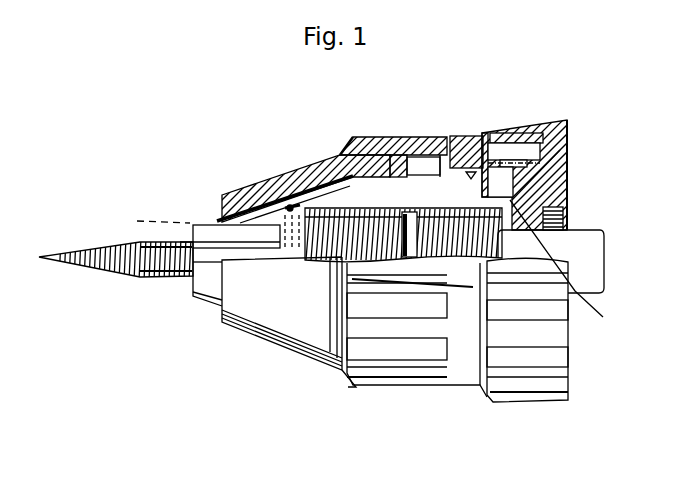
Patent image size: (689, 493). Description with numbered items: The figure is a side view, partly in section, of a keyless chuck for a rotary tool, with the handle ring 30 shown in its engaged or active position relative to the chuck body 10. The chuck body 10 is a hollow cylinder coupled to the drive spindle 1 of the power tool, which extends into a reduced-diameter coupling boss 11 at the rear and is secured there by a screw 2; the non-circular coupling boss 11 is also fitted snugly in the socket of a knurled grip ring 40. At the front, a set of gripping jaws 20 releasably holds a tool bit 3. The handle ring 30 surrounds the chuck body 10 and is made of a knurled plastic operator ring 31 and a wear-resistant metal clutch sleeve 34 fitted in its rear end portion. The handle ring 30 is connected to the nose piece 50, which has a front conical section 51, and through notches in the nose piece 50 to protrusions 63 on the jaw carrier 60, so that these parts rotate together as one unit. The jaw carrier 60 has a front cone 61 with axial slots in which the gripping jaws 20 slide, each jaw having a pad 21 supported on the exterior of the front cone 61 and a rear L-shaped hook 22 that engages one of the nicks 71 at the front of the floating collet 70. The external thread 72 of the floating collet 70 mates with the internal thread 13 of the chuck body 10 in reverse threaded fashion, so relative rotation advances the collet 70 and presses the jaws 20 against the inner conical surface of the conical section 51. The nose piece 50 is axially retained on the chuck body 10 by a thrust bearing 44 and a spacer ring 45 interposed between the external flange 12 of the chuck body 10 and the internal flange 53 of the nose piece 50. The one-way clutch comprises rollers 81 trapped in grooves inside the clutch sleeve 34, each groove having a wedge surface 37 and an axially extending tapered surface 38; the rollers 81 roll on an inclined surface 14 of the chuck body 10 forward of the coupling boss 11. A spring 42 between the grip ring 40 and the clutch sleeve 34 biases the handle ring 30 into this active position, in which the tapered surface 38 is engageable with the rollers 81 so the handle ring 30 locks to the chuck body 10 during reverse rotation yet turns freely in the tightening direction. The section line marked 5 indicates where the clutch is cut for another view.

The drive spindle 1 is at (592, 257).
The screw 2 is at (564, 218).
The tool bit 3 is at (100, 263).
The section line 5- 5 is at (451, 257).
The chuck body 10 is at (512, 200).
The coupling boss 11 is at (572, 269).
The external flange 12 is at (320, 193).
The internal thread 13 is at (453, 262).
The inclined surface 14 is at (557, 124).
The gripping jaws 20 is at (194, 301).
The pad 21 is at (232, 213).
The L-shaped hook 22 is at (262, 193).
The handle ring 30 is at (394, 388).
The operator ring 31 is at (363, 322).
The clutch sleeve 34 is at (468, 136).
The wedge surface 37 is at (460, 150).
The tapered surface 38 is at (488, 134).
The grip ring 40 is at (529, 403).
The spring 42 is at (558, 152).
The thrust bearing 44 is at (340, 153).
The spacer ring 45 is at (394, 160).
The nose piece 50 is at (254, 343).
The conical section 51 is at (298, 303).
The internal flange 53 is at (437, 173).
The jaw carrier 60 is at (290, 206).
The front cone 61 is at (146, 220).
The protrusions 63 is at (362, 152).
The floating collet 70 is at (410, 240).
The nicks 71 is at (222, 210).
The external thread 72 is at (332, 262).
The rollers 81 is at (503, 162).